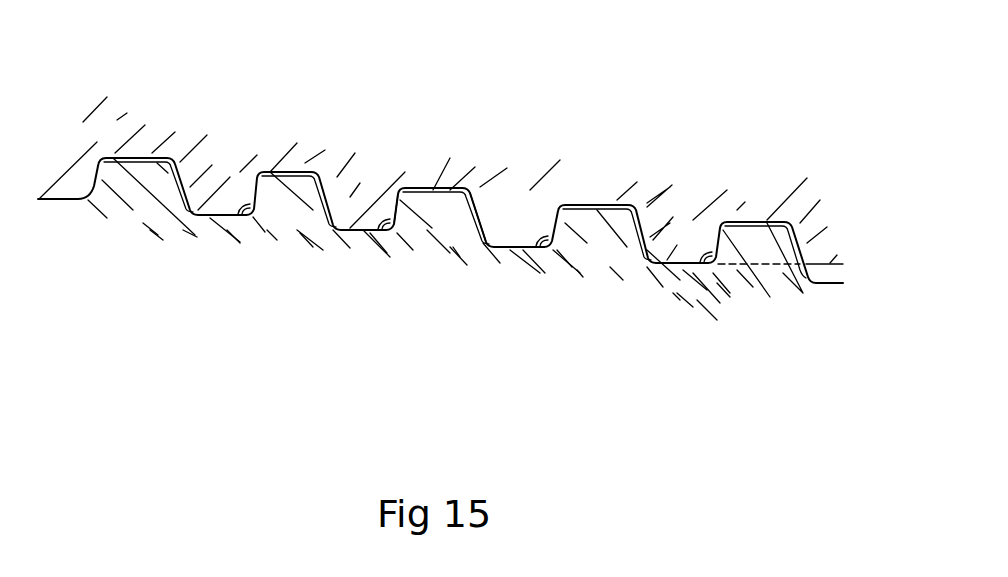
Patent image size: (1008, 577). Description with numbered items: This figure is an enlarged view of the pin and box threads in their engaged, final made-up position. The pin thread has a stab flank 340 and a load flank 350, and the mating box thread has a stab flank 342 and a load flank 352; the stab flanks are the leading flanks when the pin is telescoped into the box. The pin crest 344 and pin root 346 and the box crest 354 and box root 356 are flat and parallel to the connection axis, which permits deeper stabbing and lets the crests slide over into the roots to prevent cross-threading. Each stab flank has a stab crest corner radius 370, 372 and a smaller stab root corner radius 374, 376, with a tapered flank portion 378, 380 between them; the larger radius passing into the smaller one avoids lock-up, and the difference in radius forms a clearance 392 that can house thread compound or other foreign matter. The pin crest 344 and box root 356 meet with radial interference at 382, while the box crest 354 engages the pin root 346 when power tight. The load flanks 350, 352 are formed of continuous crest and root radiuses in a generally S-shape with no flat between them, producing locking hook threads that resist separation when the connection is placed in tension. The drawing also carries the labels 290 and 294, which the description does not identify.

The fin sheet 290 is at (772, 305).
The louver arrangement 294 is at (740, 138).
The stab flank 340 is at (335, 178).
The stab flank 342 is at (290, 147).
The crest 344 is at (580, 207).
The root 346 is at (686, 263).
The load flank 350 is at (283, 230).
The load flank 352 is at (250, 207).
The crest 354 is at (659, 262).
The root 356 is at (593, 208).
The stab crest corner radius 370 is at (430, 247).
The stab crest corner radius 372 is at (500, 247).
The stab root corner radius 374 is at (492, 250).
The stab root corner radius 376 is at (483, 212).
The tapered flank portion 378 is at (470, 230).
The tapered flank portion 380 is at (495, 243).
The radial interference 382 is at (458, 230).
The clearance 392 is at (337, 230).